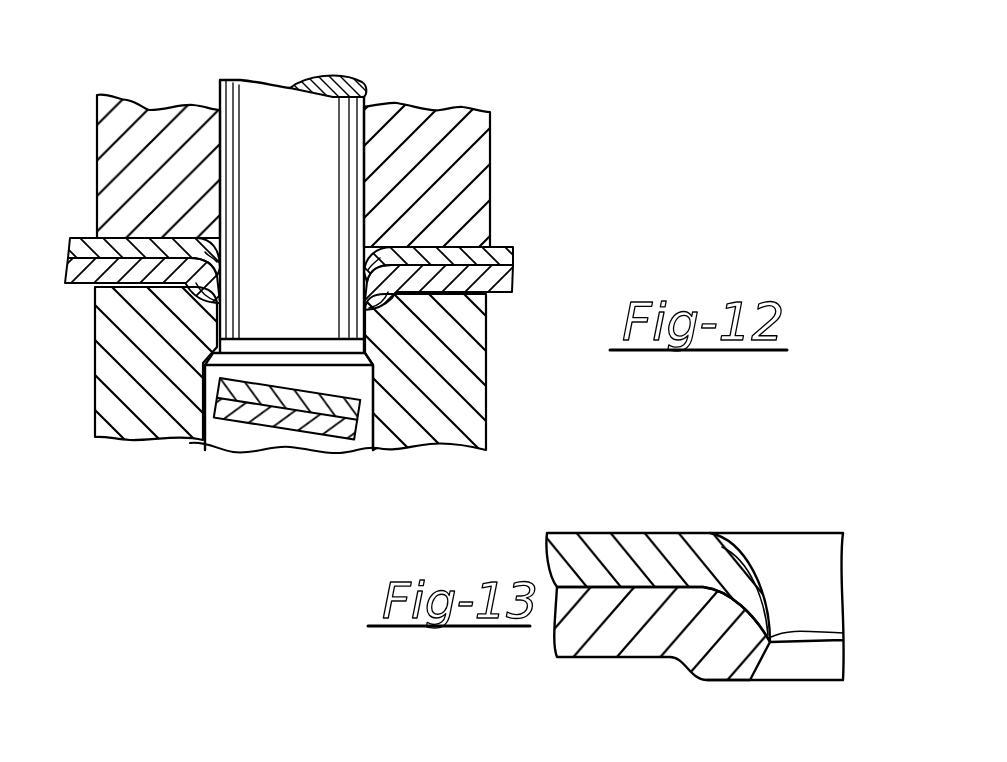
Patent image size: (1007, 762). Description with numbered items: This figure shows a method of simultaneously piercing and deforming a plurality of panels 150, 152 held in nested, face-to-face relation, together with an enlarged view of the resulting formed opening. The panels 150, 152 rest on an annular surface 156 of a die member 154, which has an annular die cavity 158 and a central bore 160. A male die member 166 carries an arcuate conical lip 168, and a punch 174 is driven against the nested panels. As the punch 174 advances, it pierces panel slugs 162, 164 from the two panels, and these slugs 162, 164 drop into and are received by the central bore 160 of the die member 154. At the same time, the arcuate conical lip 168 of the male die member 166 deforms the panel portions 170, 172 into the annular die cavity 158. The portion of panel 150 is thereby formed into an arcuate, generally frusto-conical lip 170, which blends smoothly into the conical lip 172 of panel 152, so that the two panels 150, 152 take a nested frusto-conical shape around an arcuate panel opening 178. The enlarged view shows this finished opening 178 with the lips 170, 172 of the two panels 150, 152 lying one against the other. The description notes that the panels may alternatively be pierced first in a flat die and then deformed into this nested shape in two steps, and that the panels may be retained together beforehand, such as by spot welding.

In FIG. 12, the panel 150 is at (517, 247).
In FIG. 13, the panel 150 is at (597, 547).
In FIG. 12, the panel 152 is at (513, 283).
In FIG. 13, the panel 152 is at (597, 643).
In FIG. 12, the die member 154 is at (468, 402).
In FIG. 12, the annular surface 156 is at (103, 307).
In FIG. 12, the annular die cavity 158 is at (373, 287).
In FIG. 12, the central bore 160 is at (223, 327).
In FIG. 12, the panel slug 162 is at (258, 395).
In FIG. 12, the panel slug 164 is at (293, 420).
In FIG. 12, the male die member 166 is at (473, 168).
In FIG. 12, the arcuate conical lip 168 is at (223, 258).
In FIG. 12, the frusto-conical lip 170 is at (362, 250).
In FIG. 13, the frusto-conical lip 170 is at (747, 588).
In FIG. 12, the conical lip 172 is at (216, 255).
In FIG. 13, the conical lip 172 is at (732, 655).
In FIG. 12, the punch 174 is at (360, 80).
In FIG. 13, the arcuate panel opening 178 is at (843, 633).